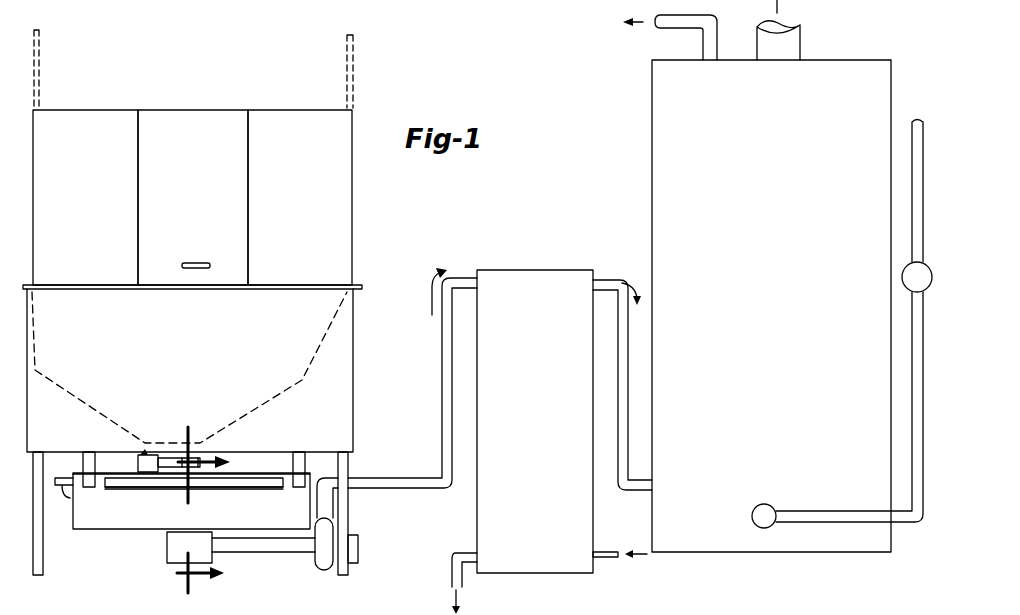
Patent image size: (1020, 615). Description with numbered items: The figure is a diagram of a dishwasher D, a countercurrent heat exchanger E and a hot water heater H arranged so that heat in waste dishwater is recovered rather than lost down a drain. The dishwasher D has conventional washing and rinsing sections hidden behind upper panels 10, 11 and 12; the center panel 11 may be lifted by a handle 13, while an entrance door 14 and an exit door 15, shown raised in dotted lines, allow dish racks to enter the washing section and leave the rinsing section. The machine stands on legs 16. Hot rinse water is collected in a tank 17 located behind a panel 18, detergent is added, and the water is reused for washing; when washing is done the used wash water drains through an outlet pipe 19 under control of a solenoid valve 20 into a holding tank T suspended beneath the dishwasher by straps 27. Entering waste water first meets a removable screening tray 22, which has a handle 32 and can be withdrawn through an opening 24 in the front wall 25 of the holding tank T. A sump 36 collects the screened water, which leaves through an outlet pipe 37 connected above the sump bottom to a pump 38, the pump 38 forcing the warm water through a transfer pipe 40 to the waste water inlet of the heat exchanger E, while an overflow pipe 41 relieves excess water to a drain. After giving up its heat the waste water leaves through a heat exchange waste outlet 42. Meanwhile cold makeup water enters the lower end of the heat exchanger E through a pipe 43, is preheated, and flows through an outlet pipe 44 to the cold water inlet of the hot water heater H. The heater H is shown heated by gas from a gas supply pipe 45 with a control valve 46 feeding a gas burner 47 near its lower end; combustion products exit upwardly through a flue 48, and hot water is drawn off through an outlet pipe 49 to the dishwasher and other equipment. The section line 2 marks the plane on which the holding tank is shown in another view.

The upper panel 10 is at (82, 193).
The center panel 11 is at (188, 193).
The upper panel 12 is at (306, 193).
The handle 13 is at (194, 262).
The entrance door 14 is at (40, 63).
The exit door 15 is at (354, 66).
The legs 16 is at (43, 558).
The tank 17 is at (118, 387).
The panel 18 is at (348, 359).
The outlet pipe 19 is at (137, 450).
The solenoid valve 20 is at (172, 458).
The screening tray 22 is at (228, 489).
The opening 24 is at (260, 490).
The front wall 25 is at (180, 528).
The straps 27 is at (80, 462).
The handle 32 is at (253, 473).
The sump 36 is at (172, 552).
The outlet pipe 37 is at (270, 553).
The pump 38 is at (327, 570).
The transfer pipe 40 is at (424, 488).
The overflow pipe 41 is at (70, 499).
The heat exchange waste outlet 42 is at (455, 550).
The pipe 43 is at (607, 558).
The outlet pipe 44 is at (628, 372).
The gas supply pipe 45 is at (912, 202).
The control valve 46 is at (902, 278).
The gas burner 47 is at (778, 481).
The flue 48 is at (800, 37).
The outlet pipe 49 is at (685, 30).
The section line 2 is at (203, 509).
The dishwasher D is at (360, 306).
The heat exchanger E is at (524, 262).
The hot water heater H is at (644, 158).
The holding tank T is at (130, 538).